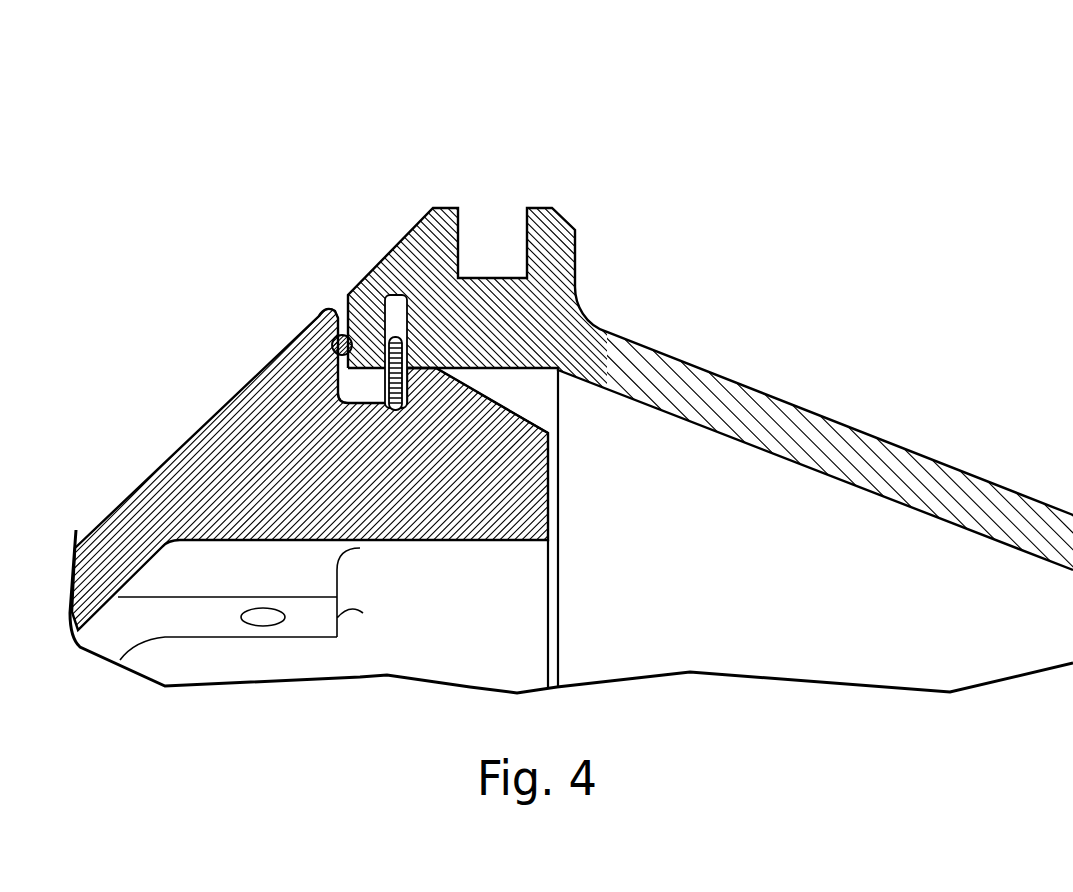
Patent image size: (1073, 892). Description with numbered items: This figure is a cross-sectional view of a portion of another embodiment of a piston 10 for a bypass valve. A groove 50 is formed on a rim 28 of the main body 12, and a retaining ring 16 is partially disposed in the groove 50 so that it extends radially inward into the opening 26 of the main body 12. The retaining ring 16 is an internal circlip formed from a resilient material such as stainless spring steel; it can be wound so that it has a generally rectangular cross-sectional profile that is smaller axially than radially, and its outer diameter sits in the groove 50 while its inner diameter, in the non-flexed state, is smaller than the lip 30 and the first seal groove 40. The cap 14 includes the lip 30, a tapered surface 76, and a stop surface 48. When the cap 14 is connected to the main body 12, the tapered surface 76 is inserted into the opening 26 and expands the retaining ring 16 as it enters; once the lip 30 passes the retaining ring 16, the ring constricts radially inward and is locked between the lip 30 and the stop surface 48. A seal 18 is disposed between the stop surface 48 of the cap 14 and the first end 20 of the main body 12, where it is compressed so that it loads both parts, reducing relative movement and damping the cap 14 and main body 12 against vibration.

The piston 10 is at (141, 176).
The main body 12 is at (840, 396).
The cap 14 is at (174, 427).
The retaining ring 16 is at (397, 413).
The seal 18 is at (331, 343).
The first end 20 is at (346, 297).
The opening 26 is at (535, 389).
The rim 28 is at (535, 308).
The lip 30 is at (428, 388).
The first seal groove 40 is at (502, 277).
The stop surface 48 is at (337, 379).
The groove 50 is at (402, 293).
The tapered surface 76 is at (520, 420).